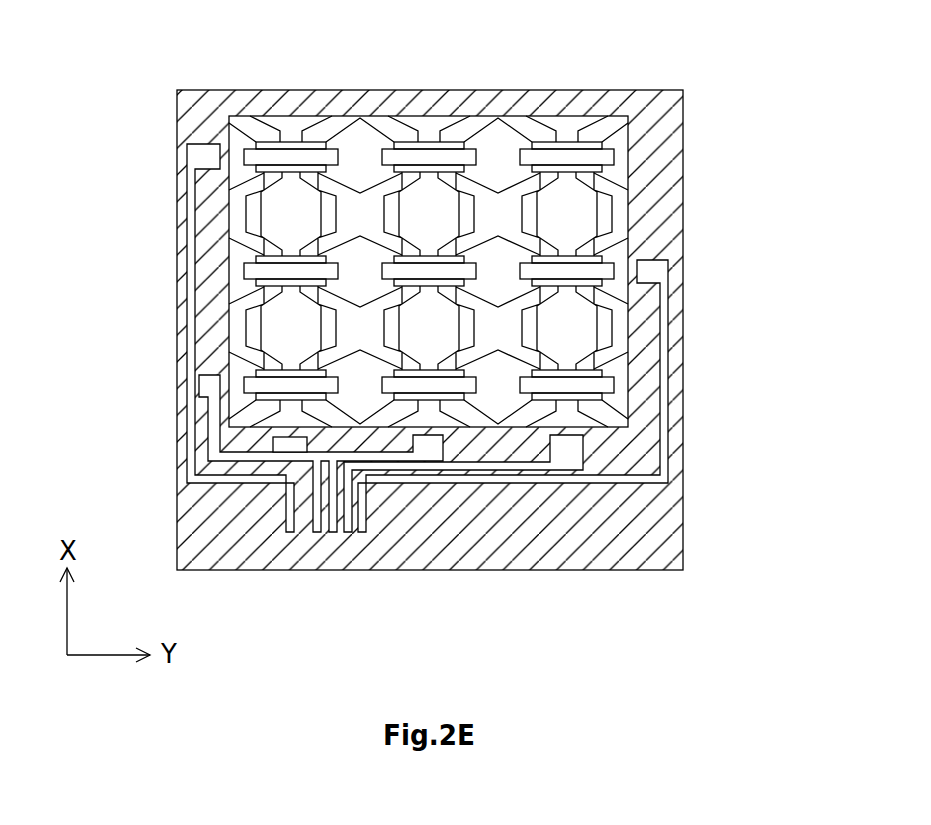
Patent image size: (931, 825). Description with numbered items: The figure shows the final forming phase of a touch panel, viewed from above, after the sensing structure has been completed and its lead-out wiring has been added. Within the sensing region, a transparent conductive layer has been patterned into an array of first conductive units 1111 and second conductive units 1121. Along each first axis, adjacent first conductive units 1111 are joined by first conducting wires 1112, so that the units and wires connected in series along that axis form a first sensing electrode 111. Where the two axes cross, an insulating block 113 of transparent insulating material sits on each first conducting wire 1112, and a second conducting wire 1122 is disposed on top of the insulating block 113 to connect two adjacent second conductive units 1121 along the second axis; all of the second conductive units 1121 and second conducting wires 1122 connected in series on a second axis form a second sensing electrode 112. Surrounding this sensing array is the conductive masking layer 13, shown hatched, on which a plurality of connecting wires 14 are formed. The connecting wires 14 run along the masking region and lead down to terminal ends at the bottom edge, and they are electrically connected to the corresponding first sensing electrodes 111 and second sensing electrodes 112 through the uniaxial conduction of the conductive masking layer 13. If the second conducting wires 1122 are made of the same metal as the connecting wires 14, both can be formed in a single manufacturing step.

The first sensing electrode 111 is at (294, 122).
The first conductive unit 1111 is at (250, 324).
The first conducting wire 1112 is at (268, 186).
The second sensing electrode 112 is at (237, 272).
The second conductive unit 1121 is at (238, 252).
The second conducting wire 1122 is at (250, 380).
The insulating block 113 is at (240, 393).
The conductive masking layer 13 is at (433, 548).
The connecting wire 14 is at (291, 533).